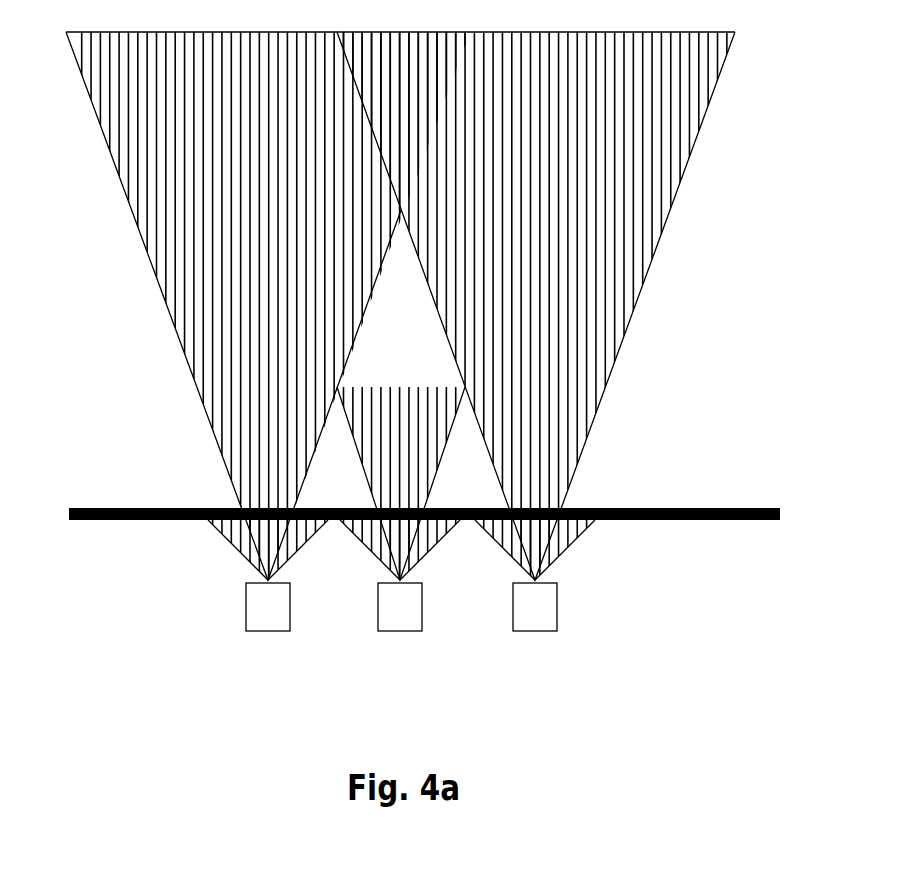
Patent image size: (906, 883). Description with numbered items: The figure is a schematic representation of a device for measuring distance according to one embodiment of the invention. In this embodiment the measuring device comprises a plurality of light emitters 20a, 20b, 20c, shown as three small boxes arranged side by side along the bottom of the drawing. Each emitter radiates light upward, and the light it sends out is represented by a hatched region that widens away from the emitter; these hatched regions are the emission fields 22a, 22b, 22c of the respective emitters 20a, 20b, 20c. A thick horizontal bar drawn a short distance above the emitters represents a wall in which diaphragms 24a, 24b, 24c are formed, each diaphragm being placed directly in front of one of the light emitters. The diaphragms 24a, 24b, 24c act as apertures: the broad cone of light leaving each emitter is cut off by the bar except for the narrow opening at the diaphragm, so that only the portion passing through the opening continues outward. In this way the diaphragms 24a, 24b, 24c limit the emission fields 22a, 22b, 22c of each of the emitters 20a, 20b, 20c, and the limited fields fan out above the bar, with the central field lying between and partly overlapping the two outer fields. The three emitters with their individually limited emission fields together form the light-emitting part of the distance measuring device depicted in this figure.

The light emitter 20a is at (245, 630).
The light emitter 20b is at (395, 618).
The light emitter 20c is at (545, 620).
The emission field 22a is at (122, 122).
The emission field 22b is at (428, 407).
The emission field 22c is at (653, 117).
The diaphragm 24a is at (258, 498).
The diaphragm 24b is at (388, 496).
The diaphragm 24c is at (542, 492).